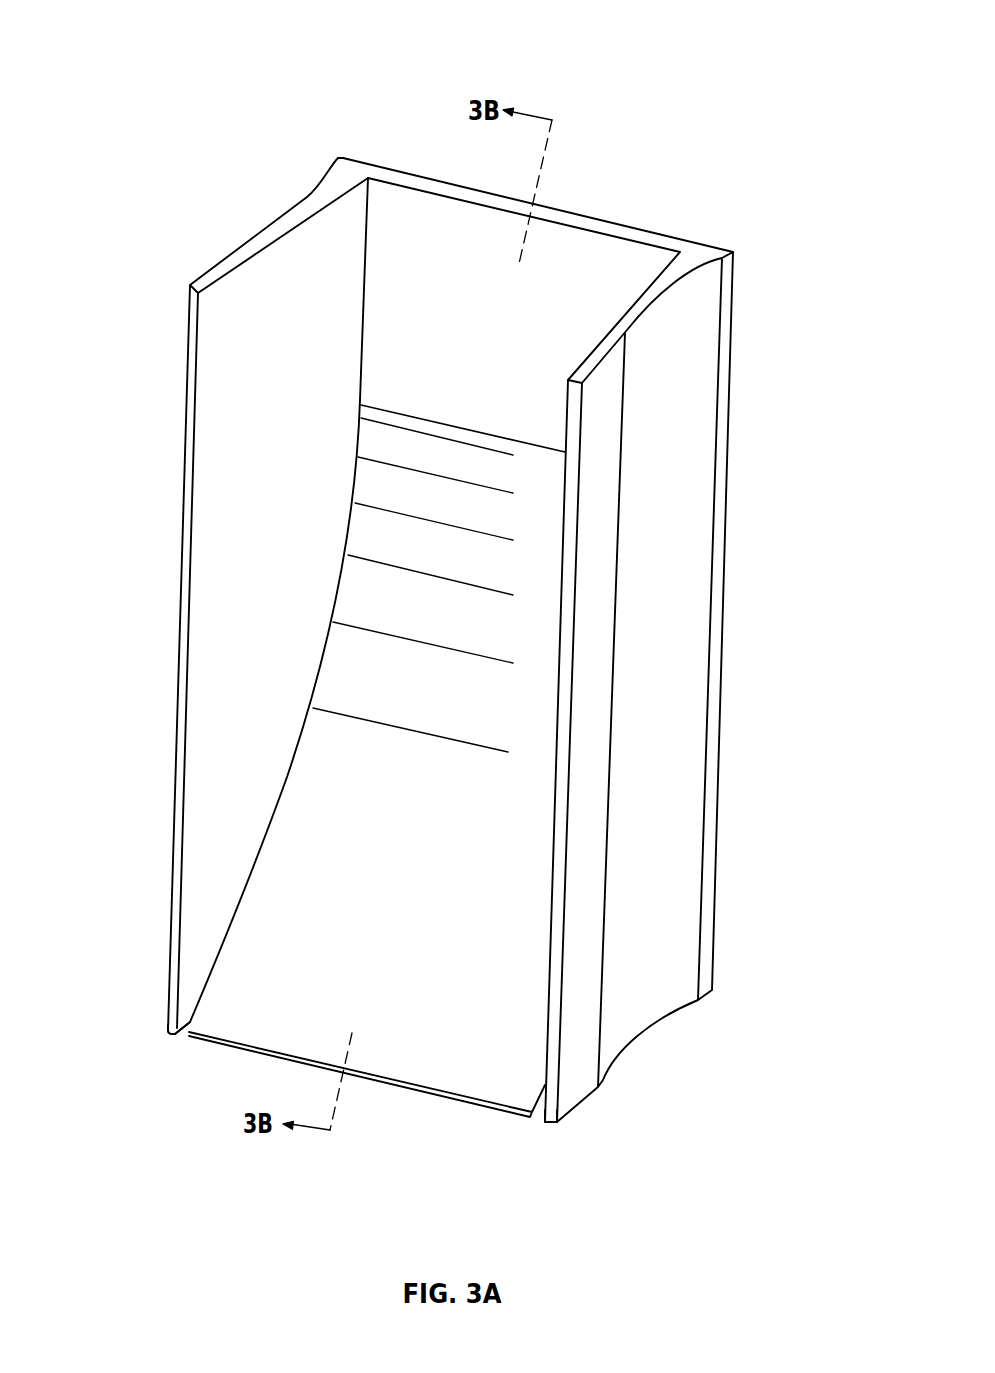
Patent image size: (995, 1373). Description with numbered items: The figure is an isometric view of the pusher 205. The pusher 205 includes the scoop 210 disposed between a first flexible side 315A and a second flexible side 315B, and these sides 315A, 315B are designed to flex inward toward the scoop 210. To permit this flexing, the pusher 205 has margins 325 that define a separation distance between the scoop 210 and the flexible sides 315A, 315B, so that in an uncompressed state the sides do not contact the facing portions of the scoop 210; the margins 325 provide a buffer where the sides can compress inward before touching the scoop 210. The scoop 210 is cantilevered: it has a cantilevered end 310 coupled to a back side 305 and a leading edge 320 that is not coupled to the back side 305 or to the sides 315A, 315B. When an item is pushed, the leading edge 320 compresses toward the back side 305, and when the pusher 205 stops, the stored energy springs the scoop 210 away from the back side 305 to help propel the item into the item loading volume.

The pusher 205 is at (206, 57).
The scoop 210 is at (502, 718).
The back side 305 is at (448, 231).
The cantilevered end 310 is at (412, 408).
The first flexible side 315A is at (177, 685).
The second flexible side 315B is at (572, 684).
The leading edge 320 is at (377, 1080).
The margins 325 is at (180, 1045).